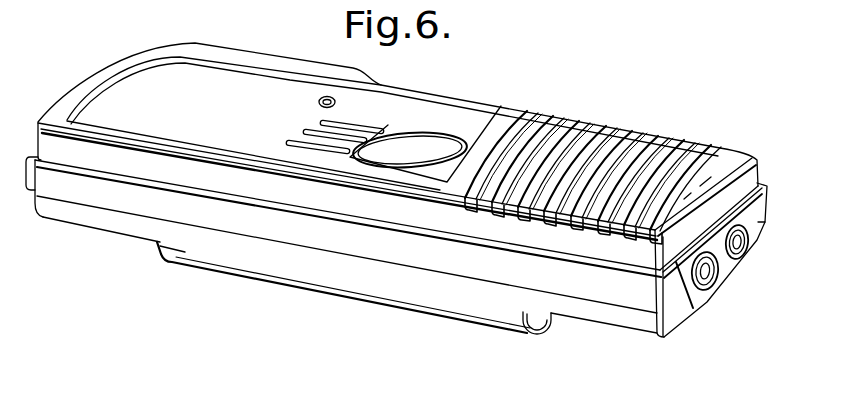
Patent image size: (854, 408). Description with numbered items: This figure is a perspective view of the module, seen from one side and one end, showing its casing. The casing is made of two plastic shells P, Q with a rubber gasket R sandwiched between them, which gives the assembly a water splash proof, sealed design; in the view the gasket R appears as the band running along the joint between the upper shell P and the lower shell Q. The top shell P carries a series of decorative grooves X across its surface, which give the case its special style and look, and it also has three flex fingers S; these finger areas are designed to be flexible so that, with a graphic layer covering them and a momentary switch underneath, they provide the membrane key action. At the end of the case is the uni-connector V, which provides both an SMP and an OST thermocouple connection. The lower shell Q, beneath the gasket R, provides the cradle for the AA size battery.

The plastic shell P is at (740, 183).
The rubber gasket R is at (103, 197).
The flex fingers S is at (350, 137).
The decorative grooves X is at (660, 143).
The lower shell Q is at (603, 313).
The uni-connector V is at (722, 272).